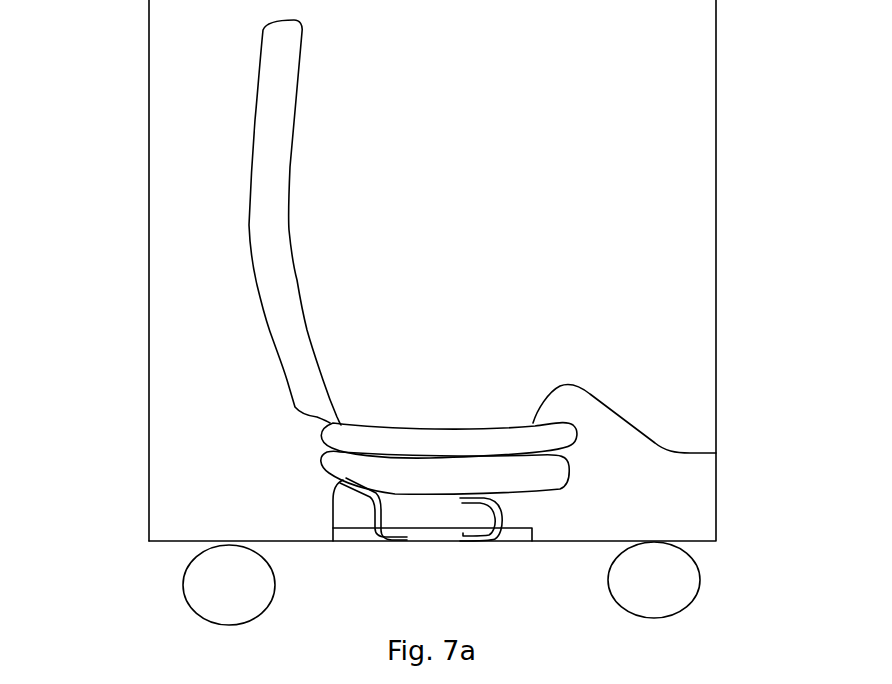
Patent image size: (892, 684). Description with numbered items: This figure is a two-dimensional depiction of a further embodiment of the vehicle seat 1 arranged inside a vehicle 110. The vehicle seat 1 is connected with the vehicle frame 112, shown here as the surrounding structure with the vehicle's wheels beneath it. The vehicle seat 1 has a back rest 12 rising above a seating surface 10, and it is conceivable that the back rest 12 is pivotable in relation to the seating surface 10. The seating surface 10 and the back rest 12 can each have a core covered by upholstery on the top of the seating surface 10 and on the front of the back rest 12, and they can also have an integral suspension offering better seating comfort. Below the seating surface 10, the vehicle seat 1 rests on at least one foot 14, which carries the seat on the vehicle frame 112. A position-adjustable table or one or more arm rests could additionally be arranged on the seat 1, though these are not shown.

The vehicle seat 1 is at (573, 316).
The seating surface 10 is at (718, 453).
The back rest 12 is at (247, 206).
The foot 14 is at (571, 515).
The vehicle 110 is at (131, 496).
The vehicle frame 112 is at (153, 408).